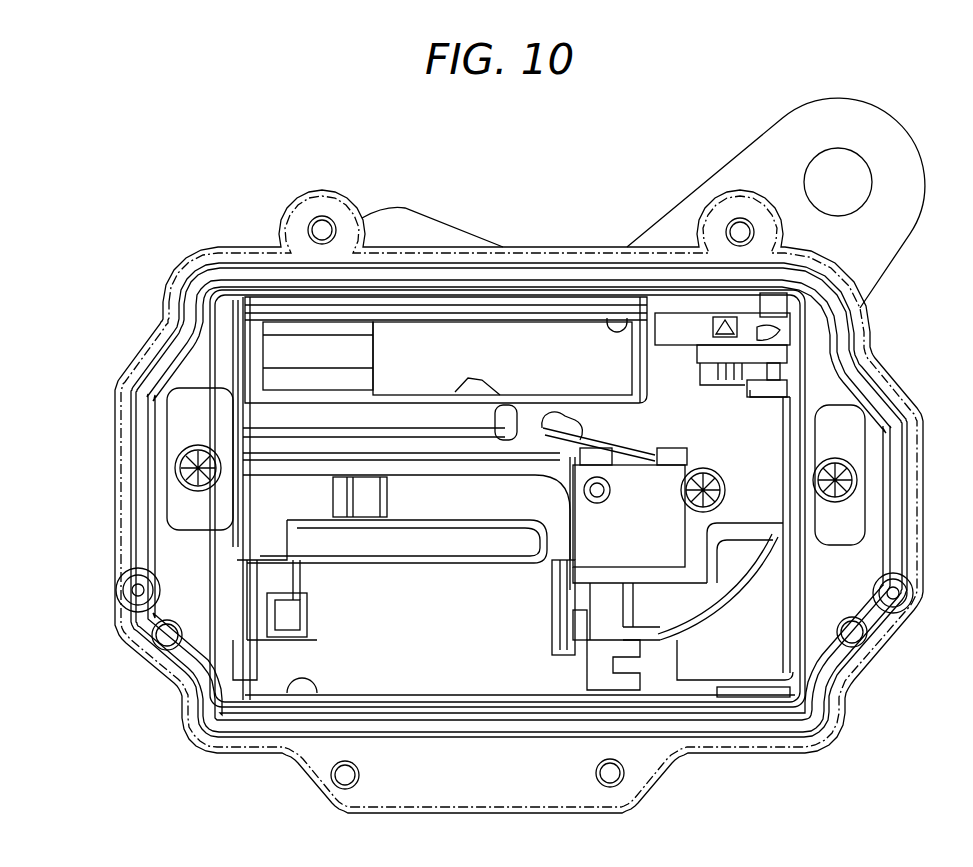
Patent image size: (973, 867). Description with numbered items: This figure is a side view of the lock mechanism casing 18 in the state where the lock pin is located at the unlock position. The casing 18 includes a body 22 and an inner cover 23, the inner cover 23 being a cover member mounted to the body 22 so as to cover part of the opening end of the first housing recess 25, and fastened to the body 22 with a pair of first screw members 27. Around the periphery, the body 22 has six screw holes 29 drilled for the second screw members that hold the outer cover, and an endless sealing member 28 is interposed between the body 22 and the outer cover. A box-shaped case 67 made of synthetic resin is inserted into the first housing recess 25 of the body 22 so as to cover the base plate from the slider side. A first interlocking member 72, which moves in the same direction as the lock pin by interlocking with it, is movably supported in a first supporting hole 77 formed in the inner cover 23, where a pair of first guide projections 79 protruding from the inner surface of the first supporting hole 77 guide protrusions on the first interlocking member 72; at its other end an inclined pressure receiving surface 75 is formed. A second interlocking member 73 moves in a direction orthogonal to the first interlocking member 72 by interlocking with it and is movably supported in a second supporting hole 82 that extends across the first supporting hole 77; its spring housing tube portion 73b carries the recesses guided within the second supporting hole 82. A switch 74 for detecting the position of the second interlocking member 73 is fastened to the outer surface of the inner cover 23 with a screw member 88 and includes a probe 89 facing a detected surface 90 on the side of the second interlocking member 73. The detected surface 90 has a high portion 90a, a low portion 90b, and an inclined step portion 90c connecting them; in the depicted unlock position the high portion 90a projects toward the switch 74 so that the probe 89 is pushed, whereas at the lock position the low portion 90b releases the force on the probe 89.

The casing 18 is at (224, 238).
The body 22 is at (553, 247).
The inner cover 23 is at (777, 427).
The first housing recess 25 is at (293, 692).
The first screw members 27 is at (178, 470).
The sealing member 28 is at (487, 725).
The screw holes 29 is at (325, 225).
The case 67 is at (440, 578).
The first interlocking member 72 is at (787, 353).
The second interlocking member 73 is at (540, 340).
The spring housing tube portion 73b is at (395, 335).
The switch 74 is at (583, 548).
The pressure receiving surface 75 is at (697, 330).
The first supporting hole 77 is at (793, 325).
The first guide projections 79 is at (723, 378).
The second supporting hole 82 is at (618, 318).
The screw member 88 is at (678, 503).
The probe 89 is at (630, 434).
The detected surface 90 is at (403, 396).
The high portion 90a is at (643, 410).
The low portion 90b is at (372, 382).
The inclined step portion 90c is at (463, 380).